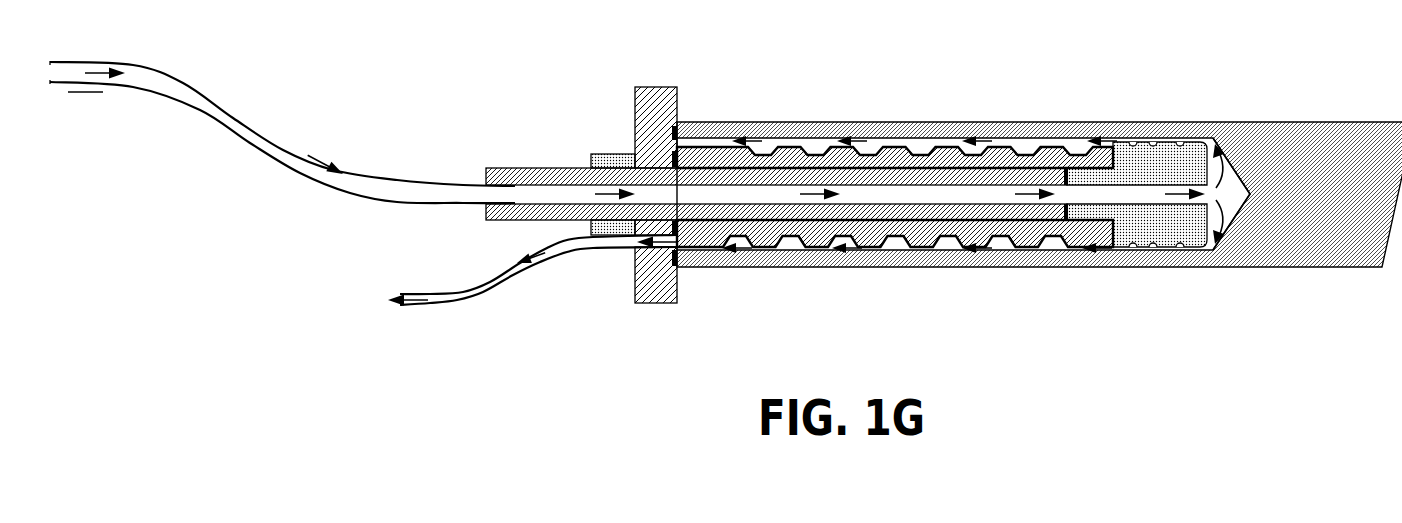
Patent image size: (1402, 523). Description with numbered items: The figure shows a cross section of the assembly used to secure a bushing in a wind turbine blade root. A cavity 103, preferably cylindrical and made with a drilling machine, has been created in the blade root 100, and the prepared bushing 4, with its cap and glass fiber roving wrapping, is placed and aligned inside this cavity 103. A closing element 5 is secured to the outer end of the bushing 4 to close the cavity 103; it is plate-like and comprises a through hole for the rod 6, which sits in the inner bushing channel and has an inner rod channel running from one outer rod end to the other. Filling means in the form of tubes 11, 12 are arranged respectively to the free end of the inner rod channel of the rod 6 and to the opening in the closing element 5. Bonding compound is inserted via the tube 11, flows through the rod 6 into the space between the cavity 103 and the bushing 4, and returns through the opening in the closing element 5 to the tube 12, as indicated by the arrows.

The bushing 4 is at (912, 152).
The closing element 5 is at (647, 92).
The rod 6 is at (545, 170).
The tube 11 is at (218, 90).
The tube 12 is at (478, 298).
The blade root 100 is at (1302, 148).
The cavity 103 is at (1232, 173).